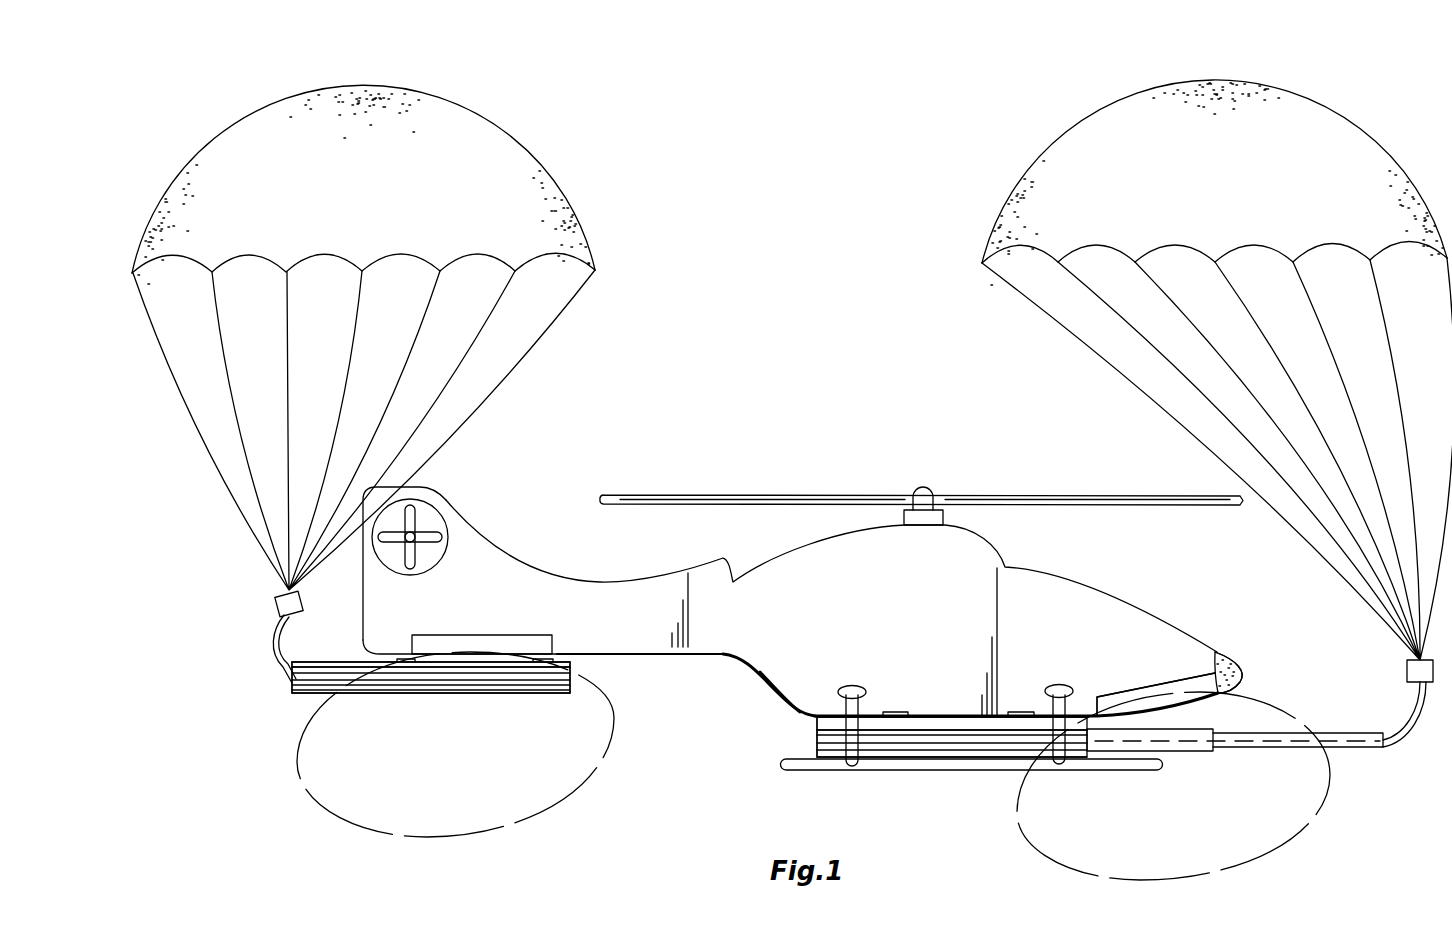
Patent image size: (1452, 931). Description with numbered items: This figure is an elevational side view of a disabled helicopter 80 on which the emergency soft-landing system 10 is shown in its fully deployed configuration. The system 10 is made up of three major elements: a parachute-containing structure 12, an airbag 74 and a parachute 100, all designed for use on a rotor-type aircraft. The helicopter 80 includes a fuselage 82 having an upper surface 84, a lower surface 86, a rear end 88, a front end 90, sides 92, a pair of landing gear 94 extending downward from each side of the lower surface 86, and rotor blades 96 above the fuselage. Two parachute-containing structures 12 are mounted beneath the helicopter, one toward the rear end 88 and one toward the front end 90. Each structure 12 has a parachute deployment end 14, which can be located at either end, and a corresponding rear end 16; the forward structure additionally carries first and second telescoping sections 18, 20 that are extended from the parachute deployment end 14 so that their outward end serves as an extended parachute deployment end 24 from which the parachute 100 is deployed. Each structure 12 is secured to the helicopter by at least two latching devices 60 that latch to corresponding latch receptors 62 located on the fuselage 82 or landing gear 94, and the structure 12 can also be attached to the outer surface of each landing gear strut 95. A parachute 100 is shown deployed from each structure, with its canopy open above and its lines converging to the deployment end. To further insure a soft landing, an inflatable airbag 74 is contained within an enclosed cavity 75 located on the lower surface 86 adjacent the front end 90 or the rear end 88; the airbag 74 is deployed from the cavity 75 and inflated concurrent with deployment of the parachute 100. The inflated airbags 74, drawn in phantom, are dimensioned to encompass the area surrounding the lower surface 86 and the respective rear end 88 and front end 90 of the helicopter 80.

The emergency soft-landing system 10 is at (897, 98).
The parachute-containing structure 12 is at (485, 680).
The parachute deployment end 14 is at (290, 686).
The rear end 16 is at (573, 682).
The first telescoping section 18 is at (1197, 751).
The second telescoping section 20 is at (1283, 748).
The extended parachute deployment end 24 is at (1387, 742).
The latching device 60 is at (413, 665).
The latch receptor 62 is at (689, 742).
The airbag 74 is at (306, 788).
The enclosed cavity 75 is at (448, 635).
The helicopter 80 is at (1082, 563).
The fuselage 82 is at (717, 636).
The upper surface 84 is at (645, 583).
The lower surface 86 is at (635, 660).
The rear end 88 is at (365, 630).
The front end 90 is at (1240, 656).
The sides 92 is at (785, 700).
The landing gear 94 is at (1147, 770).
The landing gear strut 95 is at (845, 700).
The rotor blades 96 is at (762, 497).
The parachute 100 is at (541, 182).